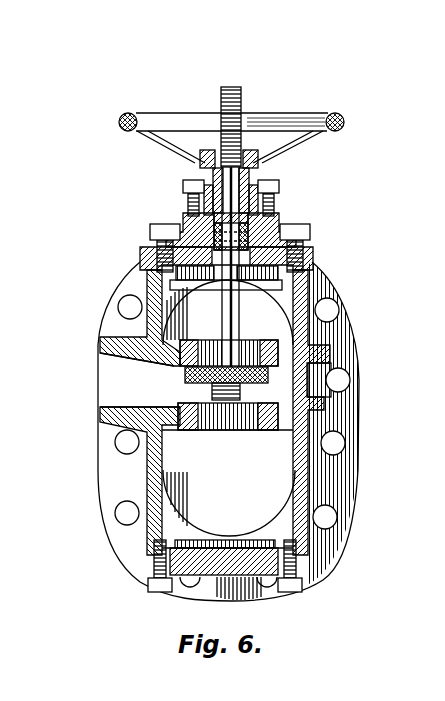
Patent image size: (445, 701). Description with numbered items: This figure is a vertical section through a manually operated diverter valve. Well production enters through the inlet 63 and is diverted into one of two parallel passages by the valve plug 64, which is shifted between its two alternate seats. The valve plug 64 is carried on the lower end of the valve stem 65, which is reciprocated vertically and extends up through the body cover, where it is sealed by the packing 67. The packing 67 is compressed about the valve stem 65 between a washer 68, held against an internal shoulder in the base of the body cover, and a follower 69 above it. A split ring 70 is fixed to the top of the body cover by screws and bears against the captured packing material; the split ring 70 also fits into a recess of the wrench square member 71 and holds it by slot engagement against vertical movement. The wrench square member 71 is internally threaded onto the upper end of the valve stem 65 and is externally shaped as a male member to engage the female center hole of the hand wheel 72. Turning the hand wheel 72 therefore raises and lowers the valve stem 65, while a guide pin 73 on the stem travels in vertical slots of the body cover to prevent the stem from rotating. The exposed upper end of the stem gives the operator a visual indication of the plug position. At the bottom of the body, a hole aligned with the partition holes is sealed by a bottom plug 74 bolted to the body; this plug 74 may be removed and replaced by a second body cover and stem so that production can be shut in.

The inlet 63 is at (100, 407).
The valve plug 64 is at (187, 373).
The valve stem 65 is at (230, 328).
The packing 67 is at (262, 220).
The washer 68 is at (268, 240).
The follower 69 is at (268, 203).
The split ring 70 is at (283, 190).
The wrench square member 71 is at (212, 171).
The hand wheel 72 is at (125, 114).
The guide pin 73 is at (203, 243).
The bottom plug 74 is at (200, 587).